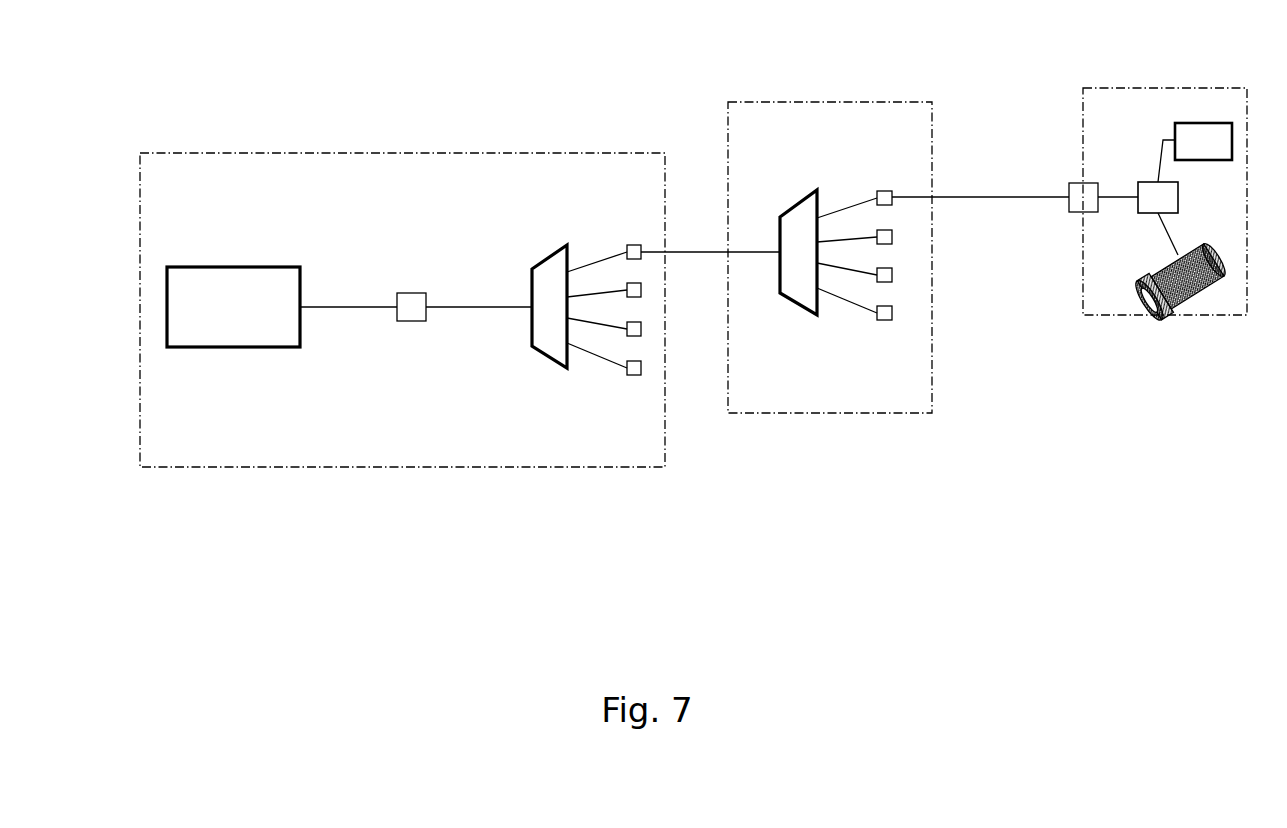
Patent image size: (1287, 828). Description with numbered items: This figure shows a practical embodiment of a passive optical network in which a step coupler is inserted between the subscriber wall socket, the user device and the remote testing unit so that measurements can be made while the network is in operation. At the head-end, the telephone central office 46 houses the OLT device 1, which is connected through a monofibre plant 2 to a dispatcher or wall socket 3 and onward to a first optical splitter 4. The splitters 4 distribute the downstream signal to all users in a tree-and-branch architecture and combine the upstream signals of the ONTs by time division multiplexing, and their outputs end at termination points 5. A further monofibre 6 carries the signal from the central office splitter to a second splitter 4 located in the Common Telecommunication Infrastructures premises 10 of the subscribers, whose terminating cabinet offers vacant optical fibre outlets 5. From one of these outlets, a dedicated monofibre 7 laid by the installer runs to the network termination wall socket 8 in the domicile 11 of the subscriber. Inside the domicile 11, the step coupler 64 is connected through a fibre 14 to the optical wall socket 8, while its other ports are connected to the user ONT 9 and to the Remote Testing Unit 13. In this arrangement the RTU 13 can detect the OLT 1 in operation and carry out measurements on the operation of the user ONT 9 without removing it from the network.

The OLT device 1 is at (273, 280).
The monofibre plant 2 is at (340, 306).
The dispatcher or wall socket 3 is at (410, 308).
The optical splitter 4 is at (545, 340).
The termination point 5 is at (630, 245).
The monofibre plant 6 is at (685, 250).
The dedicated monofibre 7 is at (980, 195).
The network termination wall socket 8 is at (1082, 200).
The ONT 9 is at (1215, 150).
The Common Telecommunication Infrastructures premises 10 is at (902, 107).
The domicile 11 is at (1127, 97).
The Remote Testing Unit 13 is at (1188, 305).
The perfectly characterized fibre 14 is at (1108, 195).
The telephone central office 46 is at (553, 165).
The step coupler 64 is at (1155, 193).